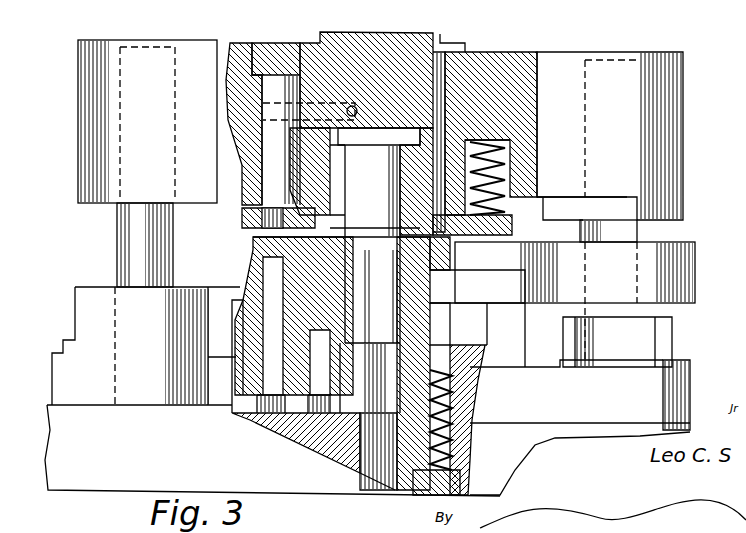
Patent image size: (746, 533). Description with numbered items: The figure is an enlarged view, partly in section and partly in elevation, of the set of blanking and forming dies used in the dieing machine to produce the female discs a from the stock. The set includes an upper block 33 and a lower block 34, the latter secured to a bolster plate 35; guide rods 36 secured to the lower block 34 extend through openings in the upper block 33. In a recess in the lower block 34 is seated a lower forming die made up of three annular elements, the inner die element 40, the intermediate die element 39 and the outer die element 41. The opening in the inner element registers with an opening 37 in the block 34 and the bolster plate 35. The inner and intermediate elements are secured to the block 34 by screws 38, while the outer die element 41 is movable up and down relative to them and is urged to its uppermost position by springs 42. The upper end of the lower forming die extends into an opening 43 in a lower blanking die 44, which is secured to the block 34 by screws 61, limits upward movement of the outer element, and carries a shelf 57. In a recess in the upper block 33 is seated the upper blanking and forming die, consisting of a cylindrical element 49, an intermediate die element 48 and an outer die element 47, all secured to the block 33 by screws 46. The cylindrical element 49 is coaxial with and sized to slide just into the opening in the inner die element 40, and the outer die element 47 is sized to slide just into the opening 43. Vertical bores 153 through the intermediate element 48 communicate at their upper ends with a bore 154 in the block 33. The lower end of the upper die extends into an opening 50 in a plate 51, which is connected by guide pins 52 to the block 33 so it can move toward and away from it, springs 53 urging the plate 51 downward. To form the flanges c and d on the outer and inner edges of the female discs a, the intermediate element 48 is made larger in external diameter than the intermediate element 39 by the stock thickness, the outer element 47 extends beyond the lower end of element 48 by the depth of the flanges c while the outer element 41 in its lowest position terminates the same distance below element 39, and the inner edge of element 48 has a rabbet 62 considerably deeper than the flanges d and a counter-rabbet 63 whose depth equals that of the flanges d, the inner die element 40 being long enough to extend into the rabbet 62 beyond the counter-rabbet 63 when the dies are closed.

The upper block 33 is at (665, 120).
The lower block 34 is at (690, 385).
The bolster plate 35 is at (522, 448).
The guide rods 36 is at (117, 220).
The opening 37 is at (362, 430).
The screws 38 is at (290, 397).
The intermediate die element 39 is at (452, 266).
The inner die element 40 is at (428, 306).
The outer die element 41 is at (455, 293).
The springs 42 is at (476, 402).
The opening 43 is at (300, 262).
The lower blanking die 44 is at (255, 276).
The screws 46 is at (437, 143).
The outer die element 47 is at (250, 144).
The intermediate die element 48 is at (535, 57).
The cylindrical element 49 is at (388, 132).
The opening 50 is at (300, 206).
The plate 51 is at (240, 208).
The guide pins 52 is at (253, 44).
The springs 53 is at (505, 165).
The shelf 57 is at (680, 272).
The screws 61 is at (232, 410).
The rabbet 62 is at (352, 228).
The counter-rabbet 63 is at (462, 238).
The vertical bores 153 is at (350, 128).
The bore 154 is at (302, 50).
The female discs a is at (355, 255).
The flanges c is at (290, 240).
The flanges d is at (352, 235).